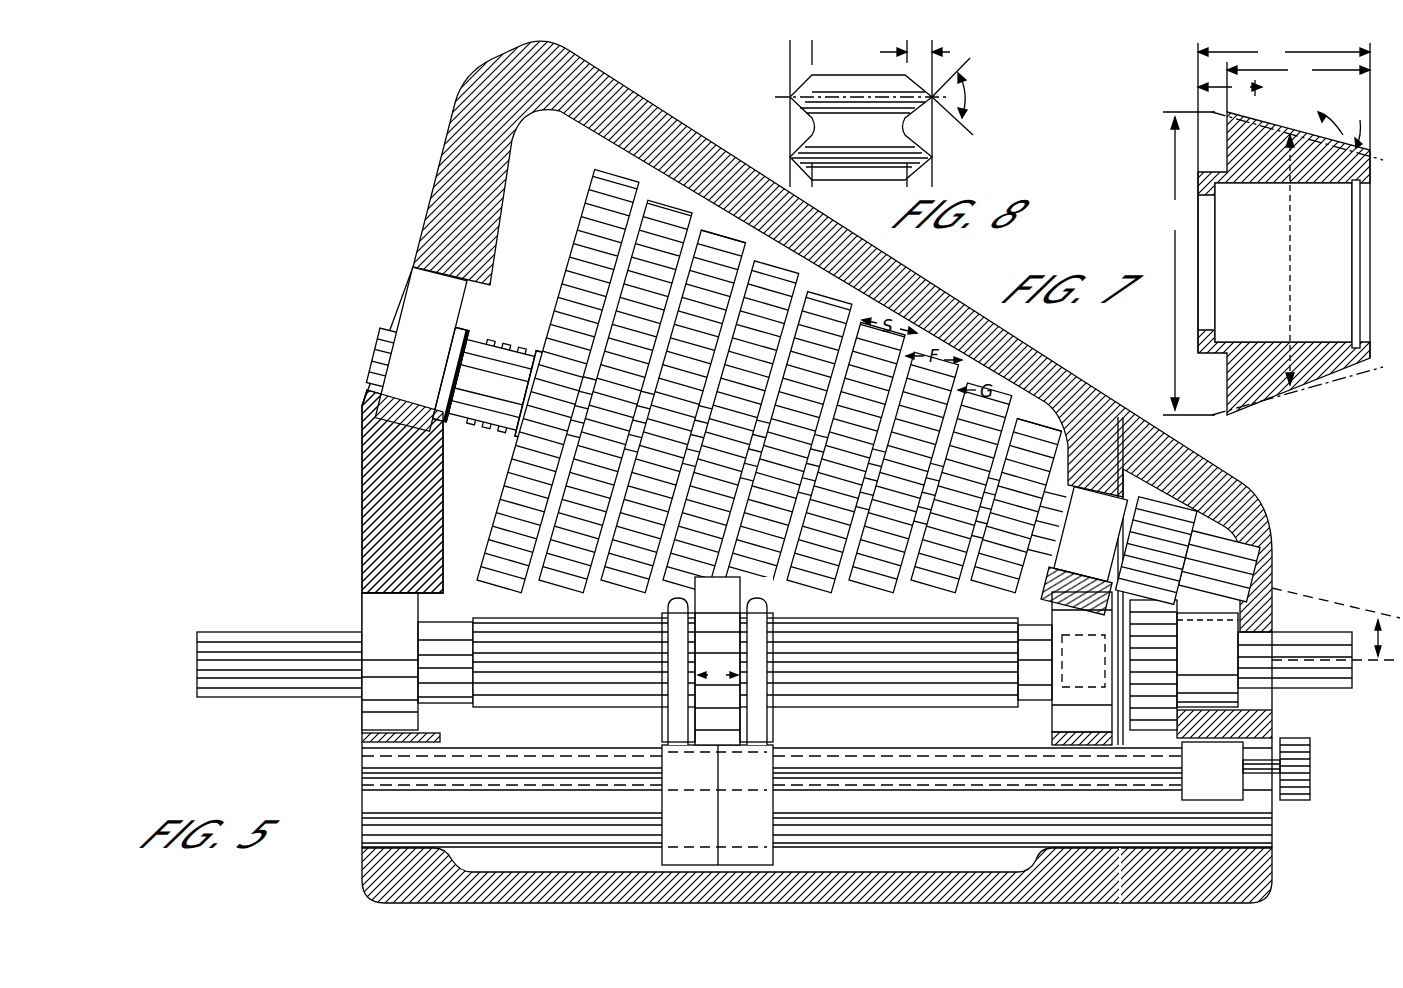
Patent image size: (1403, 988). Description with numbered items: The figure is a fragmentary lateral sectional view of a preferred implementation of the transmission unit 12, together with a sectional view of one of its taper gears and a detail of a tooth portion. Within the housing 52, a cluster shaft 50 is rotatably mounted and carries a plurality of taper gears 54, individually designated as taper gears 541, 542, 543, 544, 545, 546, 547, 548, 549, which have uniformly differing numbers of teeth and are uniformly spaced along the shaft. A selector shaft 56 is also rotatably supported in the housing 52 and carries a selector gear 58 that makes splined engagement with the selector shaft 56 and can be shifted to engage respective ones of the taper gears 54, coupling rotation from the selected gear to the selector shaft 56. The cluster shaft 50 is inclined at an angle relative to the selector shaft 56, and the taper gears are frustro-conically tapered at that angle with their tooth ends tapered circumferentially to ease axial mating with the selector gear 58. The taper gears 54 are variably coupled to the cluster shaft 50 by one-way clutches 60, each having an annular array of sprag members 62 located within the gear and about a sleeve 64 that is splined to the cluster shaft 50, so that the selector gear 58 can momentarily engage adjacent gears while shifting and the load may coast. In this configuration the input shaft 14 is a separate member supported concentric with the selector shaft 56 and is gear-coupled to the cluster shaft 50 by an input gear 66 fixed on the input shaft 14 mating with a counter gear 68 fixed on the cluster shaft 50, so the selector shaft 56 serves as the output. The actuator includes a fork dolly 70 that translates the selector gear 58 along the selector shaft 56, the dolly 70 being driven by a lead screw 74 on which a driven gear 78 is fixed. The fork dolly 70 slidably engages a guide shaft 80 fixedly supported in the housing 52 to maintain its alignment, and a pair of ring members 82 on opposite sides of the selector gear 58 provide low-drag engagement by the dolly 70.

In FIG. 5, the transmission unit 12 is at (330, 762).
In FIG. 5, the input shaft 14 is at (1302, 636).
In FIG. 5, the cluster shaft 50 is at (1108, 512).
In FIG. 5, the housing 52 is at (362, 540).
In FIG. 5, the taper gears 54 is at (745, 250).
In FIG. 7, the taper gears 54 is at (1160, 332).
In FIG. 8, the taper gears 54 is at (950, 150).
In FIG. 5, the taper gear 541 is at (990, 582).
In FIG. 5, the taper gear 542 is at (928, 582).
In FIG. 5, the taper gear 543 is at (870, 582).
In FIG. 5, the taper gear 544 is at (830, 582).
In FIG. 5, the taper gear 545 is at (782, 581).
In FIG. 5, the taper gear 546 is at (672, 582).
In FIG. 5, the taper gear 547 is at (612, 582).
In FIG. 5, the taper gear 548 is at (556, 582).
In FIG. 5, the taper gear 549 is at (486, 582).
In FIG. 5, the selector shaft 56 is at (568, 708).
In FIG. 5, the selector gear 58 is at (695, 724).
In FIG. 5, the one-way clutch 60 is at (625, 318).
In FIG. 5, the sprag members 62 is at (622, 335).
In FIG. 5, the sleeve 64 is at (598, 354).
In FIG. 5, the input gear 66 is at (1178, 656).
In FIG. 5, the counter gear 68 is at (1160, 528).
In FIG. 5, the fork dolly 70 is at (662, 800).
In FIG. 5, the lead screw 74 is at (905, 746).
In FIG. 5, the driven gear 78 is at (1295, 738).
In FIG. 5, the guide shaft 80 is at (590, 856).
In FIG. 5, the ring members 82 is at (773, 726).